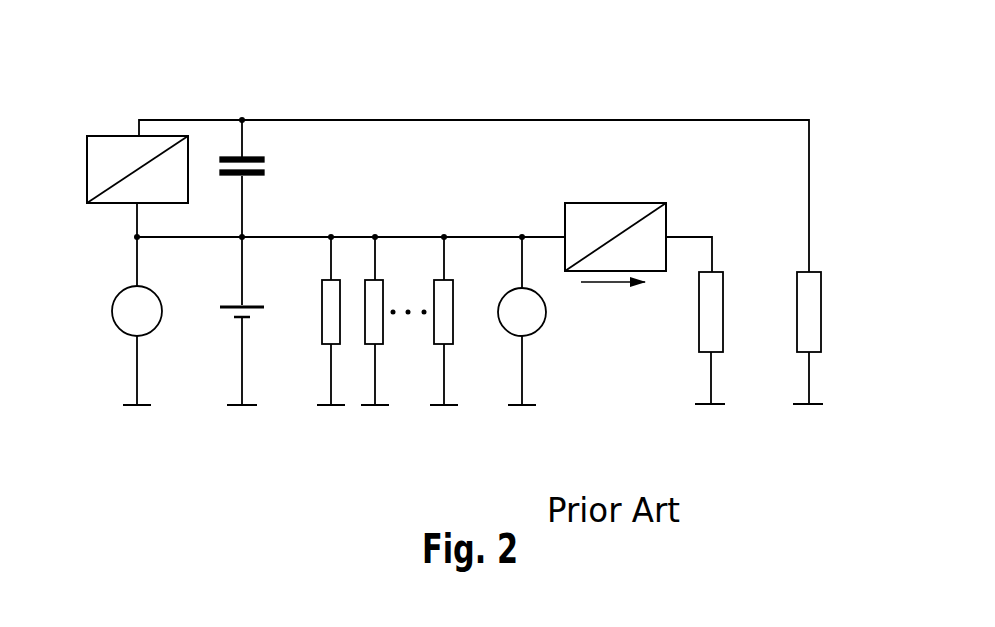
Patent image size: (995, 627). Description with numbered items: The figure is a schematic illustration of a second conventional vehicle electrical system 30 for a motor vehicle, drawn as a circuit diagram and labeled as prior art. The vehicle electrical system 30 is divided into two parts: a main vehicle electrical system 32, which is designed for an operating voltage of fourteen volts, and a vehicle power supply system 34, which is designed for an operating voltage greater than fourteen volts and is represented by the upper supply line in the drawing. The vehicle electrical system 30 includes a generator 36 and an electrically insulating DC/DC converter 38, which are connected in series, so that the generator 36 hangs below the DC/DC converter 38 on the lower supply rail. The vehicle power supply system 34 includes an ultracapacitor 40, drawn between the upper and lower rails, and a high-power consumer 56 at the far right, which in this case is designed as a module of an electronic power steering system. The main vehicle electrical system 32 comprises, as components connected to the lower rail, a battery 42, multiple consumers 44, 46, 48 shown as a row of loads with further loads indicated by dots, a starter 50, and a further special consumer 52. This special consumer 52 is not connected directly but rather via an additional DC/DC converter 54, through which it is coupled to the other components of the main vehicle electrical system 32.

The vehicle electrical system 30 is at (147, 97).
The main vehicle electrical system 32 is at (353, 408).
The vehicle power supply system 34 is at (603, 82).
The generator 36 is at (109, 373).
The DC/DC converter 38 is at (105, 208).
The ultracapacitor 40 is at (298, 167).
The battery 42 is at (222, 363).
The consumer 44 is at (308, 365).
The consumer 46 is at (399, 370).
The consumer 48 is at (467, 370).
The starter 50 is at (553, 370).
The special consumer 52 is at (686, 362).
The DC/DC converter 54 is at (638, 192).
The high-power consumer 56 is at (787, 362).